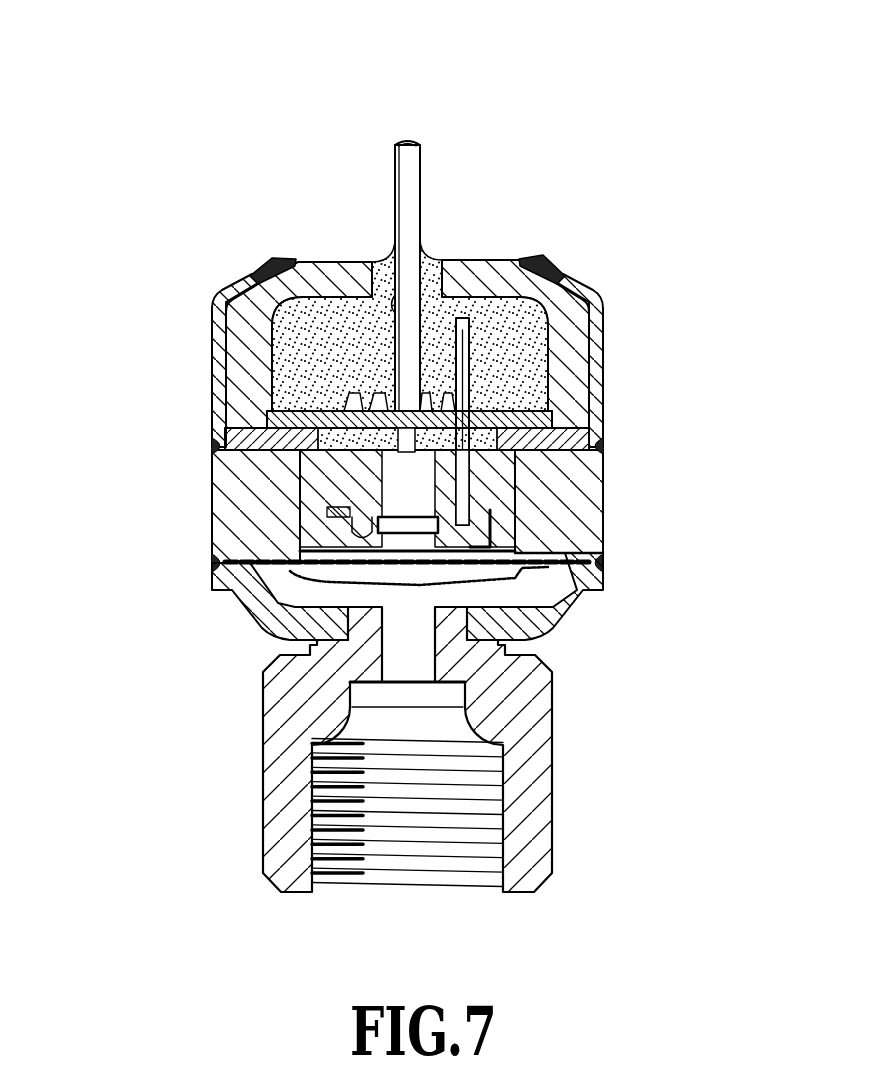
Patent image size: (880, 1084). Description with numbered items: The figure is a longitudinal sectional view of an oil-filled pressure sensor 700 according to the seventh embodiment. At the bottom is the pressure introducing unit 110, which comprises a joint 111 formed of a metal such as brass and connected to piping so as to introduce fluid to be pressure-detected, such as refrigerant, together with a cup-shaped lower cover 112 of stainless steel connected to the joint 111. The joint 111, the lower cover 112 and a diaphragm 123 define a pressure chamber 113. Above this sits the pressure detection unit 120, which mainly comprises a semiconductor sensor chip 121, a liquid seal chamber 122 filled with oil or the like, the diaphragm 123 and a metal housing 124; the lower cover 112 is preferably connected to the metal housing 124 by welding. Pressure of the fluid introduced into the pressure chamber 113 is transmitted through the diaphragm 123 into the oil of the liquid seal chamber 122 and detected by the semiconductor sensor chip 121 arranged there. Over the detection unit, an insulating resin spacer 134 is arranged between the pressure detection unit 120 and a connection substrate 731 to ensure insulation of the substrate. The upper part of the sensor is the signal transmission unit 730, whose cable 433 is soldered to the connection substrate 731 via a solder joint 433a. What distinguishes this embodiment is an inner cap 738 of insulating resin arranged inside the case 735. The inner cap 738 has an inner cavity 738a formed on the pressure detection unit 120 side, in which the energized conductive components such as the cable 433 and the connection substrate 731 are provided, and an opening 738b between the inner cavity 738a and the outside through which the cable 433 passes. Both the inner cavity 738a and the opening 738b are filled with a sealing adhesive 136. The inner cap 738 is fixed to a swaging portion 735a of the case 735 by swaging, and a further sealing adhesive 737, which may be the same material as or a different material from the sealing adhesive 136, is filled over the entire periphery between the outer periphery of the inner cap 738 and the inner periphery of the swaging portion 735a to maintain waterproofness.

The pressure sensor 700 is at (524, 110).
The signal transmission unit 730 is at (191, 341).
The case 735 is at (605, 352).
The swaging portion 735a is at (583, 275).
The sealing adhesive 737 is at (535, 256).
The inner cap 738 is at (580, 318).
The inner cavity 738a is at (530, 373).
The opening 738b is at (395, 302).
The sealing adhesive 136 is at (300, 350).
The cable 433 is at (407, 183).
The solder joint 433a is at (403, 457).
The connection substrate 731 is at (530, 418).
The spacer 134 is at (565, 440).
The pressure detection unit 120 is at (191, 493).
The metal housing 124 is at (575, 500).
The semiconductor sensor chip 121 is at (405, 527).
The liquid seal chamber 122 is at (470, 537).
The diaphragm 123 is at (500, 555).
The pressure chamber 113 is at (307, 597).
The lower cover 112 is at (548, 603).
The pressure introducing unit 110 is at (254, 758).
The joint 111 is at (527, 833).